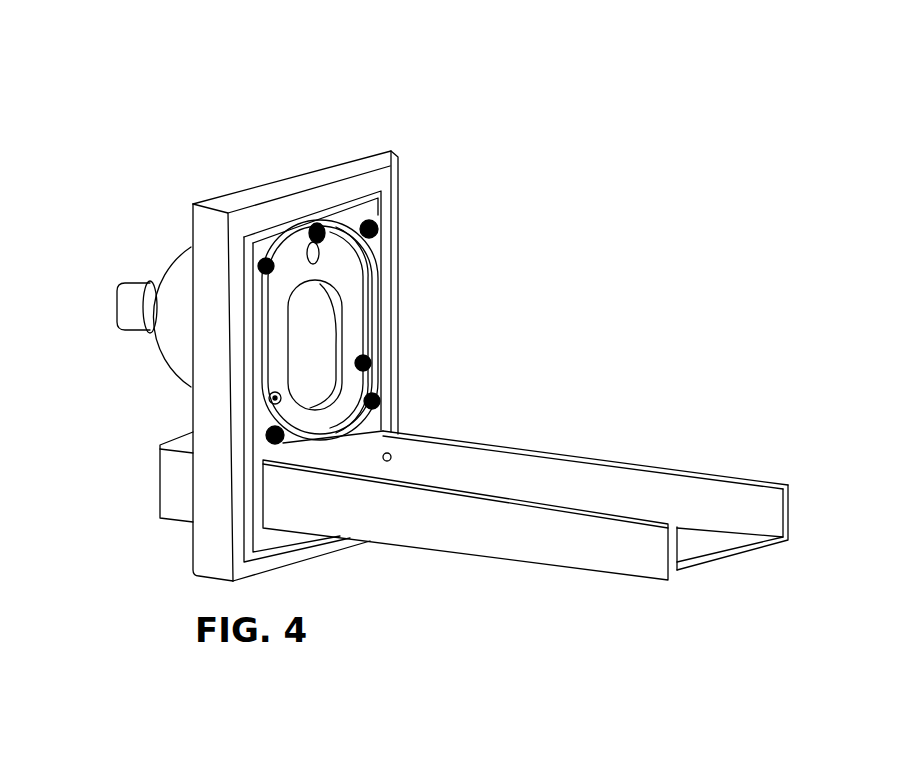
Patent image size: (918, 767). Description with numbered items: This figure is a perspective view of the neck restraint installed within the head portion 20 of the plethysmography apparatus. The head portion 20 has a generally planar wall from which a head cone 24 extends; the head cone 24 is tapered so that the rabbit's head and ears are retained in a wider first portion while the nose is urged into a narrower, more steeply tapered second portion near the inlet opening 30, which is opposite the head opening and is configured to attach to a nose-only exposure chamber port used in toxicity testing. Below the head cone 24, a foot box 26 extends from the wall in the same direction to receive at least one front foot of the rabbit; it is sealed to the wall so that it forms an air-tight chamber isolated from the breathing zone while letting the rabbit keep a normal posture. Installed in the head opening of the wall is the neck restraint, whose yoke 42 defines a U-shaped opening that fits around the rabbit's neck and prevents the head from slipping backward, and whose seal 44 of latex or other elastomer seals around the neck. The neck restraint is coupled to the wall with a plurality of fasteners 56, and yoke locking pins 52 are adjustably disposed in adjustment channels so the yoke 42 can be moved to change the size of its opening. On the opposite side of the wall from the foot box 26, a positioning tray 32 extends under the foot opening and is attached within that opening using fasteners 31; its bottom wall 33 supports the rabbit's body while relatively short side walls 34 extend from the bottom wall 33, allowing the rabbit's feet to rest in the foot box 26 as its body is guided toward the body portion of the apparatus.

The head portion 20 is at (378, 128).
The head cone 24 is at (165, 273).
The inlet opening 30 is at (117, 308).
The foot box 26 is at (173, 480).
The yoke 42 is at (348, 268).
The seal 44 is at (312, 428).
The yoke locking pins 52 is at (319, 222).
The fasteners 56 is at (262, 262).
The positioning tray 32 is at (524, 446).
The side walls 34 is at (748, 498).
The bottom wall 33 is at (703, 551).
The fasteners 31 is at (392, 459).